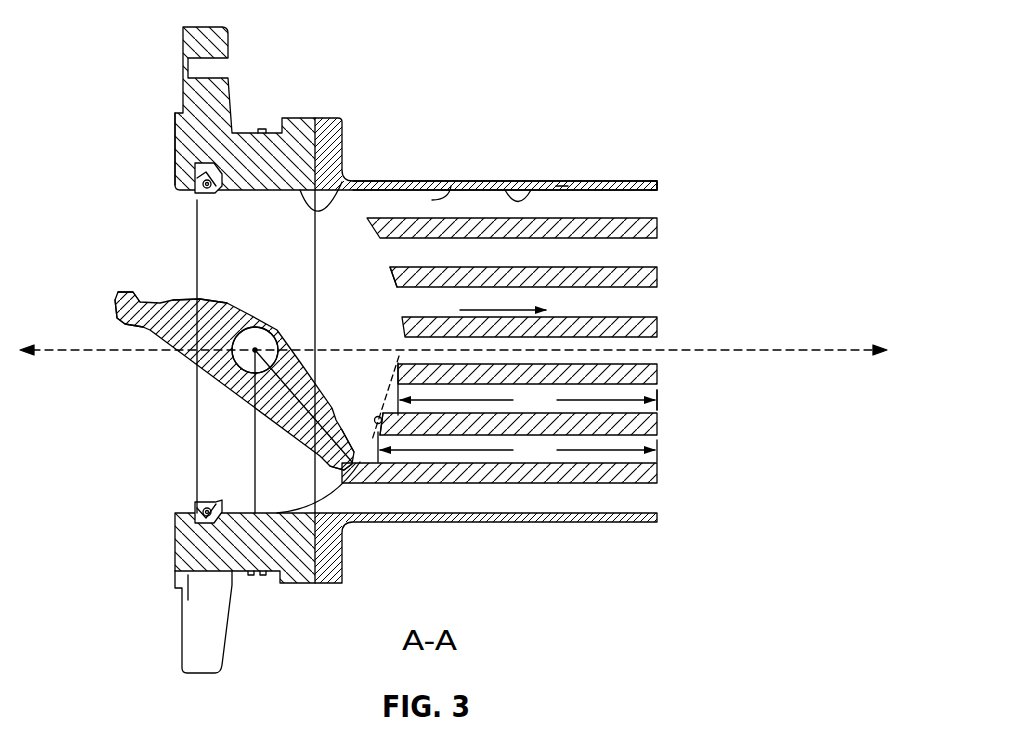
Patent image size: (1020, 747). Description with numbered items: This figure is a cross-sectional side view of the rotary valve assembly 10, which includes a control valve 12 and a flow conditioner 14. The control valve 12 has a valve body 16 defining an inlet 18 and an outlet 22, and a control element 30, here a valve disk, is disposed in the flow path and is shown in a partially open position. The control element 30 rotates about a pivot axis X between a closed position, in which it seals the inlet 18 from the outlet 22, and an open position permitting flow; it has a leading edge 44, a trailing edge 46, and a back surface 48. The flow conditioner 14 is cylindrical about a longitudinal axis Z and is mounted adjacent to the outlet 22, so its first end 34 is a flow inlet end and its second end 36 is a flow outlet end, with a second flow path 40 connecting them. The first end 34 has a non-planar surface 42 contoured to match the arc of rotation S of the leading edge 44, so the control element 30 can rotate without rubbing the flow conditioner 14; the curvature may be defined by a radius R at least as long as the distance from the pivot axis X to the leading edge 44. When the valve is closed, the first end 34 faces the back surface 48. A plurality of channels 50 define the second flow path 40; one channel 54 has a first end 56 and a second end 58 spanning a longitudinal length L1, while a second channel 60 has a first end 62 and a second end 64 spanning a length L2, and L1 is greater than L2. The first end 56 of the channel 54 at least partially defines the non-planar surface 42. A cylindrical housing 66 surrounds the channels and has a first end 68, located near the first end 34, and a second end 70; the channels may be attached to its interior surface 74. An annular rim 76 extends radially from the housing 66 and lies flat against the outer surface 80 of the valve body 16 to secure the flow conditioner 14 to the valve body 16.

The rotary valve assembly 10 is at (80, 78).
The control valve 12 is at (155, 163).
The flow conditioner 14 is at (632, 180).
The valve body 16 is at (289, 152).
The inlet 18 is at (177, 197).
The outlet 22 is at (367, 216).
The control element 30 is at (190, 301).
The first end 34 is at (390, 281).
The second end 36 is at (660, 274).
The second flow path 40 is at (517, 310).
The non-planar surface 42 is at (380, 428).
The leading edge 44 is at (360, 465).
The trailing edge 46 is at (115, 298).
The back surface 48 is at (210, 300).
The plurality of channels 50 is at (451, 186).
The channel 54 is at (633, 444).
The first end 56 is at (352, 448).
The second end 58 is at (658, 452).
The second channel 60 is at (633, 393).
The first end 62 is at (378, 412).
The second end 64 is at (658, 395).
The cylindrical housing 66 is at (562, 184).
The first end 68 is at (313, 557).
The second end 70 is at (658, 187).
The interior surface 74 is at (513, 183).
The annular rim 76 is at (350, 162).
The outer surface 80 is at (339, 150).
The pivot axis X is at (255, 350).
The radius R is at (253, 425).
The arc of rotation S is at (380, 430).
The longitudinal axis Z is at (88, 358).
The longitudinal length L1 is at (517, 452).
The longitudinal length L2 is at (527, 393).